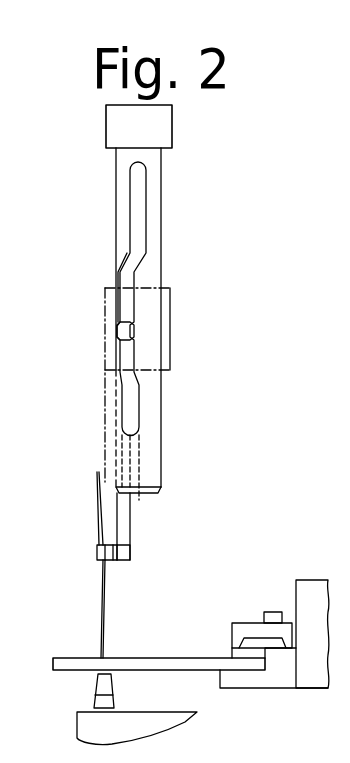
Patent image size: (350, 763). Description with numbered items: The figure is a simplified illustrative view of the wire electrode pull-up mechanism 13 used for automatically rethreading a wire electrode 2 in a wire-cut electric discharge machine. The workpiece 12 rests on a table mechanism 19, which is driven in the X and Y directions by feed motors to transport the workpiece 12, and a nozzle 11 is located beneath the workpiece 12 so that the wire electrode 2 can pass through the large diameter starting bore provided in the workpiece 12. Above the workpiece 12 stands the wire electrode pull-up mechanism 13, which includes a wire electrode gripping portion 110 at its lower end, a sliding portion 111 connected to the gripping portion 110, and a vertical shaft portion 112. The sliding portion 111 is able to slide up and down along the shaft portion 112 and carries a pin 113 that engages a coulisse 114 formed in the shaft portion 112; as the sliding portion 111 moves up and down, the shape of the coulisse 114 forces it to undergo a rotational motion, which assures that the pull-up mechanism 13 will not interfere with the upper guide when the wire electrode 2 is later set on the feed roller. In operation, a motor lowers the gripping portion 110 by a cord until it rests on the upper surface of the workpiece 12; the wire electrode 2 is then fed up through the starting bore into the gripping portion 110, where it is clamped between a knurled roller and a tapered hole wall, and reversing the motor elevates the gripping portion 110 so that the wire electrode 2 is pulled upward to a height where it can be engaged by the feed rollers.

The wire electrode 2 is at (105, 618).
The nozzle 11 is at (99, 688).
The workpiece 12 is at (143, 669).
The wire electrode pull-up mechanism 13 is at (182, 267).
The table mechanism 19 is at (300, 683).
The wire electrode gripping portion 110 is at (97, 548).
The sliding portion 111 is at (170, 302).
The shaft portion 112 is at (155, 447).
The pin 113 is at (131, 330).
The coulisse 114 is at (130, 183).